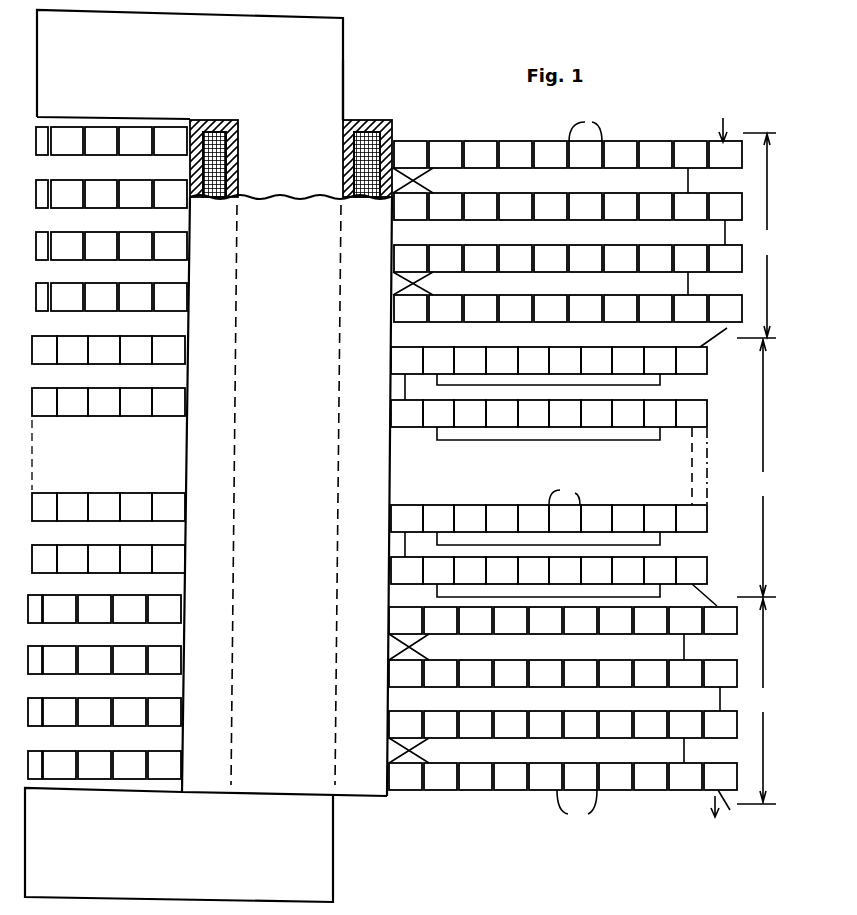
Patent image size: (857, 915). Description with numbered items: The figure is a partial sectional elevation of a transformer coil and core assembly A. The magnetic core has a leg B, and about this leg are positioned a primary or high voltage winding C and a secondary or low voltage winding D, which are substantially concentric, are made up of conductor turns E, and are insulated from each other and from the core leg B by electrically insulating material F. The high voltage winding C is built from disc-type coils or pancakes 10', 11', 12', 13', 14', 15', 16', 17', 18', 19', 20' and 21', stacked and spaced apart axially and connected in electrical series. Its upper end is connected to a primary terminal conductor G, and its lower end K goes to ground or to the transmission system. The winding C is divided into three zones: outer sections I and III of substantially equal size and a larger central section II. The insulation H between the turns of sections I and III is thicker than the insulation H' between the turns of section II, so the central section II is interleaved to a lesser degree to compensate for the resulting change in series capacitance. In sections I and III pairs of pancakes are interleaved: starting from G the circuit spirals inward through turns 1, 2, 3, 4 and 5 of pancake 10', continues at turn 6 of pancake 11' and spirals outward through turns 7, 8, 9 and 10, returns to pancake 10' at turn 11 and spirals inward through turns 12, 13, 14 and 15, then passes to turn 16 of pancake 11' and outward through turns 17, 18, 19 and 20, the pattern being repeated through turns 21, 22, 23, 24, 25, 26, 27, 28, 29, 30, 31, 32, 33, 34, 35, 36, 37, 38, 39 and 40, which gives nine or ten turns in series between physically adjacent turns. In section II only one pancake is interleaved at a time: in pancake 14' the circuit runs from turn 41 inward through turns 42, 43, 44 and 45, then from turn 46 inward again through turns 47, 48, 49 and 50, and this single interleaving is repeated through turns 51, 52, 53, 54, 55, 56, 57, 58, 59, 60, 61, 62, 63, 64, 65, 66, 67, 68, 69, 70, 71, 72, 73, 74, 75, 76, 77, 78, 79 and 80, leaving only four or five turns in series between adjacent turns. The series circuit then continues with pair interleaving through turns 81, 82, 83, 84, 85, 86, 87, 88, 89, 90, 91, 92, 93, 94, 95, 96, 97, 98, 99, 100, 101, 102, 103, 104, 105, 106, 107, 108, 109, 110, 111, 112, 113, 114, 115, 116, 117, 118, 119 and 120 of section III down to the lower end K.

The transformer coil and core assembly A is at (388, 65).
The core leg B is at (345, 100).
The primary or high voltage winding C is at (550, 471).
The secondary or low voltage winding D is at (387, 793).
The conductor turns E is at (390, 88).
The electrically insulating material F is at (363, 121).
The primary terminal conductor G is at (723, 124).
The electrical insulation H is at (579, 468).
The electrical insulation H' is at (564, 491).
The lower end K is at (713, 811).
The outer section I is at (759, 235).
The central section II is at (756, 467).
The outer section III is at (756, 700).
The pancake 10' is at (575, 181).
The pancake 11' is at (741, 233).
The pancake 12' is at (574, 284).
The pancake 13' is at (720, 343).
The pancake 14' is at (576, 379).
The pancake 15' is at (592, 422).
The pancake 16' is at (576, 533).
The pancake 17' is at (591, 579).
The pancake 18' is at (577, 622).
The pancake 19' is at (731, 697).
The pancake 20' is at (563, 751).
The pancake 21' is at (735, 812).
The turn 1 is at (725, 154).
The turn 2 is at (655, 154).
The turn 3 is at (585, 154).
The turn 4 is at (291, 147).
The turn 5 is at (290, 147).
The turn 6 is at (290, 200).
The turn 7 is at (291, 200).
The turn 8 is at (550, 206).
The turn 9 is at (620, 206).
The turn 10 is at (690, 206).
The turn 11 is at (690, 154).
The turn 12 is at (620, 154).
The turn 13 is at (550, 154).
The turn 14 is at (291, 147).
The turn 15 is at (290, 147).
The turn 16 is at (290, 200).
The turn 17 is at (291, 200).
The turn 18 is at (585, 206).
The turn 19 is at (655, 206).
The turn 20 is at (725, 206).
The winding turn 21 is at (725, 258).
The winding turn 22 is at (655, 258).
The winding turn 23 is at (585, 258).
The winding turn 24 is at (291, 252).
The winding turn 25 is at (290, 252).
The winding turn 26 is at (290, 302).
The winding turn 27 is at (291, 302).
The winding turn 28 is at (550, 308).
The winding turn 29 is at (620, 308).
The winding turn 30 is at (690, 308).
The winding turn 31 is at (690, 258).
The winding turn 32 is at (620, 258).
The winding turn 33 is at (550, 258).
The winding turn 34 is at (291, 252).
The winding turn 35 is at (290, 252).
The winding turn 36 is at (290, 302).
The winding turn 37 is at (291, 302).
The winding turn 38 is at (585, 308).
The winding turn 39 is at (655, 308).
The winding turn 40 is at (725, 308).
The turn 41 is at (691, 360).
The turn 42 is at (628, 360).
The turn 43 is at (565, 360).
The turn 44 is at (287, 355).
The turn 45 is at (287, 355).
The turn 46 is at (660, 360).
The turn 47 is at (596, 360).
The turn 48 is at (533, 360).
The turn 49 is at (287, 355).
The turn 50 is at (287, 355).
The winding turn 51 is at (287, 407).
The winding turn 52 is at (287, 407).
The winding turn 53 is at (533, 413).
The winding turn 54 is at (596, 413).
The winding turn 55 is at (660, 413).
The winding turn 56 is at (287, 407).
The winding turn 57 is at (287, 407).
The winding turn 58 is at (565, 413).
The winding turn 59 is at (628, 413).
The winding turn 60 is at (691, 413).
The winding turn 61 is at (691, 518).
The winding turn 62 is at (628, 518).
The winding turn 63 is at (565, 518).
The winding turn 64 is at (287, 512).
The winding turn 65 is at (287, 512).
The winding turn 66 is at (660, 518).
The winding turn 67 is at (596, 518).
The winding turn 68 is at (533, 518).
The winding turn 69 is at (287, 512).
The winding turn 70 is at (287, 512).
The winding turn 71 is at (287, 564).
The winding turn 72 is at (287, 564).
The winding turn 73 is at (533, 570).
The winding turn 74 is at (596, 570).
The winding turn 75 is at (660, 570).
The winding turn 76 is at (287, 564).
The winding turn 77 is at (287, 564).
The winding turn 78 is at (565, 570).
The winding turn 79 is at (628, 570).
The winding turn 80 is at (691, 570).
The winding turn 81 is at (720, 620).
The winding turn 82 is at (650, 620).
The winding turn 83 is at (580, 620).
The winding turn 84 is at (285, 614).
The winding turn 85 is at (285, 614).
The winding turn 86 is at (285, 666).
The winding turn 87 is at (285, 666).
The winding turn 88 is at (545, 673).
The winding turn 89 is at (615, 673).
The winding turn 90 is at (685, 673).
The winding turn 91 is at (685, 620).
The winding turn 92 is at (615, 620).
The winding turn 93 is at (545, 620).
The winding turn 94 is at (285, 614).
The winding turn 95 is at (285, 614).
The winding turn 96 is at (285, 666).
The winding turn 97 is at (285, 666).
The winding turn 98 is at (580, 673).
The winding turn 99 is at (650, 673).
The winding turn 100 is at (720, 673).
The winding turn 101 is at (720, 724).
The winding turn 102 is at (650, 724).
The winding turn 103 is at (580, 724).
The winding turn 104 is at (285, 718).
The winding turn 105 is at (285, 718).
The winding turn 106 is at (285, 770).
The winding turn 107 is at (285, 770).
The winding turn 108 is at (545, 776).
The winding turn 109 is at (615, 776).
The winding turn 110 is at (685, 776).
The winding turn 111 is at (685, 724).
The winding turn 112 is at (615, 724).
The winding turn 113 is at (545, 724).
The winding turn 114 is at (285, 718).
The winding turn 115 is at (285, 718).
The winding turn 116 is at (285, 770).
The winding turn 117 is at (285, 770).
The winding turn 118 is at (580, 776).
The winding turn 119 is at (650, 776).
The winding turn 120 is at (720, 776).